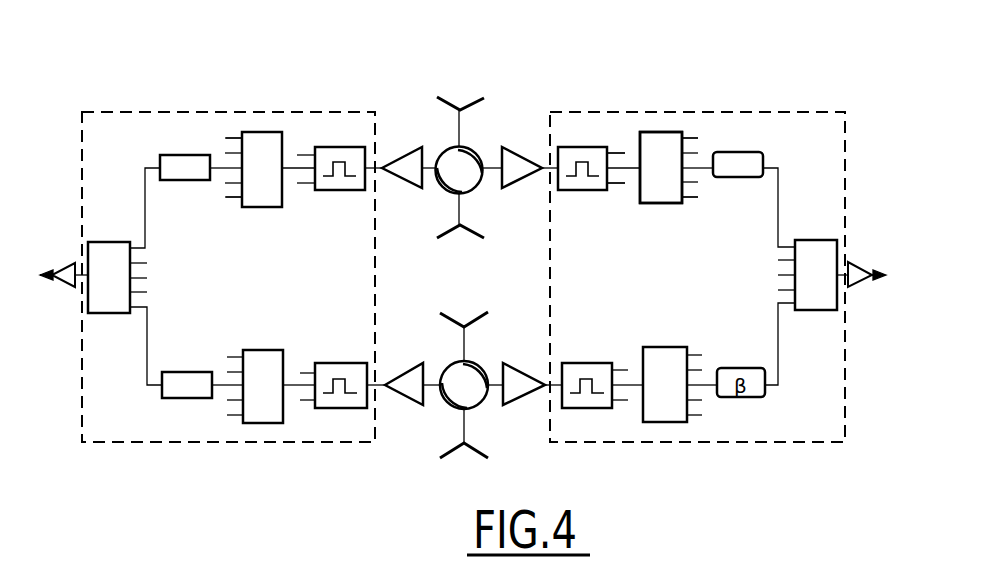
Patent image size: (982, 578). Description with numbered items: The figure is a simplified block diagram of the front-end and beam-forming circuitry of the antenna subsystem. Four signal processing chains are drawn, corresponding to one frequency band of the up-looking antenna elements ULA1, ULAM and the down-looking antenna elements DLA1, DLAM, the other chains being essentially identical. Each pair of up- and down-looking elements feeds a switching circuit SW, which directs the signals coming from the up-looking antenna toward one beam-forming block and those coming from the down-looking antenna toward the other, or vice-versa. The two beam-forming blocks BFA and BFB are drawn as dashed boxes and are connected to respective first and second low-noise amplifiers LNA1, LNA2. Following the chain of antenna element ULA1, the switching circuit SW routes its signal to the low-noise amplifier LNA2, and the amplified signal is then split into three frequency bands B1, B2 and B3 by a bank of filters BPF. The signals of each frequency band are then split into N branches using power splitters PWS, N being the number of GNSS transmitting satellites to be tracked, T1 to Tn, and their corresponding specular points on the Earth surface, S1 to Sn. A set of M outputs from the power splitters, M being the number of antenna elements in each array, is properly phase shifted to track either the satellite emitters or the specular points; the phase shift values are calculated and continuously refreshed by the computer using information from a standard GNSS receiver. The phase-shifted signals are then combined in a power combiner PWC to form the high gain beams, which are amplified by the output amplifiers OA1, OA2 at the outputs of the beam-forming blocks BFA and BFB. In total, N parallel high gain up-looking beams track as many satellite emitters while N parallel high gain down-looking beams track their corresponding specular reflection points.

The beam-forming block BFB is at (207, 112).
The beam-forming block BFA is at (707, 112).
The first low-noise amplifier LNA1 is at (522, 150).
The second low-noise amplifier LNA2 is at (407, 150).
The switching circuit SW is at (448, 146).
The up-looking antenna element ULA1 is at (487, 97).
The up-looking antenna element ULAM is at (458, 337).
The down-looking antenna element DLA1 is at (470, 220).
The down-looking antenna element DLAM is at (458, 427).
The bank of filters BPF is at (578, 192).
The frequency band B1 is at (620, 144).
The frequency band B2 is at (661, 167).
The frequency band B3 is at (620, 195).
The transmitting satellite T1 is at (699, 131).
The transmitting satellite Tn is at (699, 209).
The specular point S1 is at (225, 131).
The specular point Sn is at (225, 209).
The power splitter PWS is at (660, 203).
The power combiner PWC is at (813, 240).
The output amplifier OA1 is at (860, 287).
The output amplifier OA2 is at (65, 287).